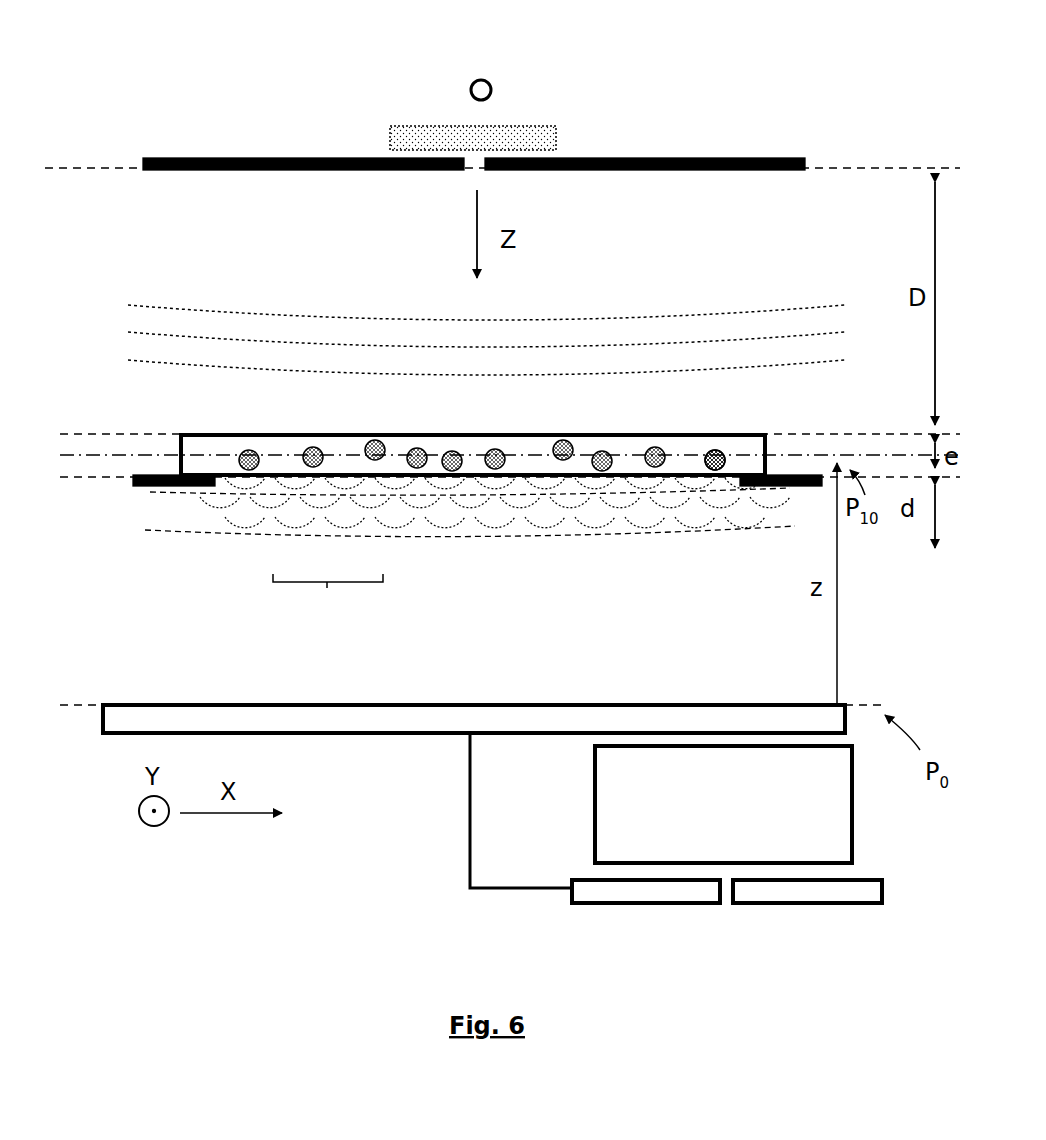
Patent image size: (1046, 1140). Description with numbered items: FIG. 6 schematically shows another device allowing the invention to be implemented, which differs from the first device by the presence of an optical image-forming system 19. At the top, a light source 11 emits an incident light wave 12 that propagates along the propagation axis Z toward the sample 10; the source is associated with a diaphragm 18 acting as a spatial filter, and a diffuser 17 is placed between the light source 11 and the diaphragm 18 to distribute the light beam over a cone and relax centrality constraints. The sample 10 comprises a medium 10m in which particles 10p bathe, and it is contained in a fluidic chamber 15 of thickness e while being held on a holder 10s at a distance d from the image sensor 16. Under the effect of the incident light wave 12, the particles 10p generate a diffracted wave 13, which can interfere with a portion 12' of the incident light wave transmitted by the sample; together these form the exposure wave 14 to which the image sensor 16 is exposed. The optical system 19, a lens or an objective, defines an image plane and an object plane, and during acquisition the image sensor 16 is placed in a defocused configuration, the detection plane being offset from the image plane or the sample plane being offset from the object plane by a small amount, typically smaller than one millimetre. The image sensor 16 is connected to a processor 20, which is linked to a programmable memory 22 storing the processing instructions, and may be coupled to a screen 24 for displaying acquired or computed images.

The light source 11 is at (466, 86).
The diffuser 17 is at (538, 142).
The diaphragm 18 is at (812, 165).
The incident light wave 12 is at (452, 337).
The sample 10 is at (180, 432).
The particles 10p is at (362, 444).
The medium 10m is at (688, 455).
The fluidic chamber 15 is at (772, 450).
The holder 10s is at (170, 492).
The transmitted portion of the incident light wave 12' is at (470, 536).
The diffracted wave 13 is at (373, 533).
The exposure wave 14 is at (858, 622).
The optical image-forming system 19 is at (480, 628).
The image sensor 16 is at (524, 723).
The screen 24 is at (832, 777).
The processor 20 is at (640, 893).
The programmable memory 22 is at (780, 893).